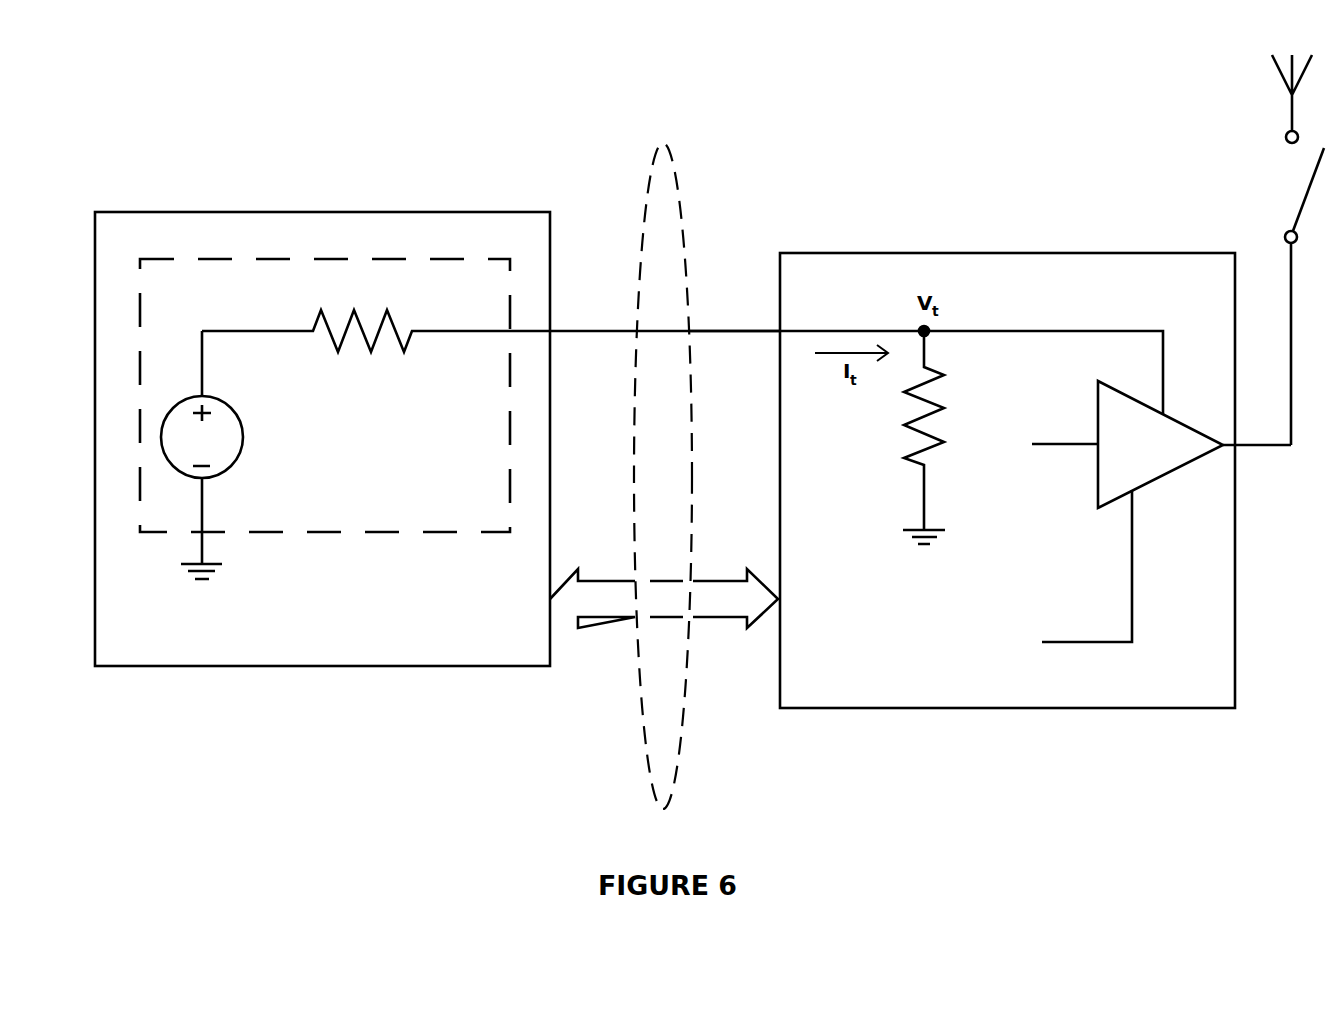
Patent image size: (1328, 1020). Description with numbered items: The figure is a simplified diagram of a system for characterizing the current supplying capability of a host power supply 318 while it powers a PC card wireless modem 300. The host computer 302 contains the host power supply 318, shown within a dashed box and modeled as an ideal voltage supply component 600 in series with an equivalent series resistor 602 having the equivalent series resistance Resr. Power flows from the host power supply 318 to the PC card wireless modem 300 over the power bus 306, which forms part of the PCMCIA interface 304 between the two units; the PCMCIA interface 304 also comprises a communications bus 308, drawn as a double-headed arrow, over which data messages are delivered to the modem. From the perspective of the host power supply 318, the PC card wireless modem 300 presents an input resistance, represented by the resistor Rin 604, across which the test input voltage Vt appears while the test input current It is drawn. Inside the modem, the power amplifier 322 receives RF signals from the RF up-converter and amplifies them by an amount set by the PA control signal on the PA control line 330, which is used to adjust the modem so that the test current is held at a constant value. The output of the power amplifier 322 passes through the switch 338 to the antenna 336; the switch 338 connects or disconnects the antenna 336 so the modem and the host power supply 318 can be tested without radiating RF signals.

The PC card wireless modem 300 is at (1148, 713).
The host computer 302 is at (433, 675).
The PCMCIA interface 304 is at (680, 195).
The power bus 306 is at (740, 323).
The communications bus 308 is at (715, 623).
The host power supply 318 is at (263, 538).
The power amplifier 322 is at (1093, 413).
The PA control line 330 is at (1123, 562).
The antenna 336 is at (1262, 78).
The switch 338 is at (1288, 186).
The ideal voltage supply component 600 is at (232, 408).
The equivalent series resistor 602 is at (348, 359).
The input resistance resistor 604 is at (898, 427).